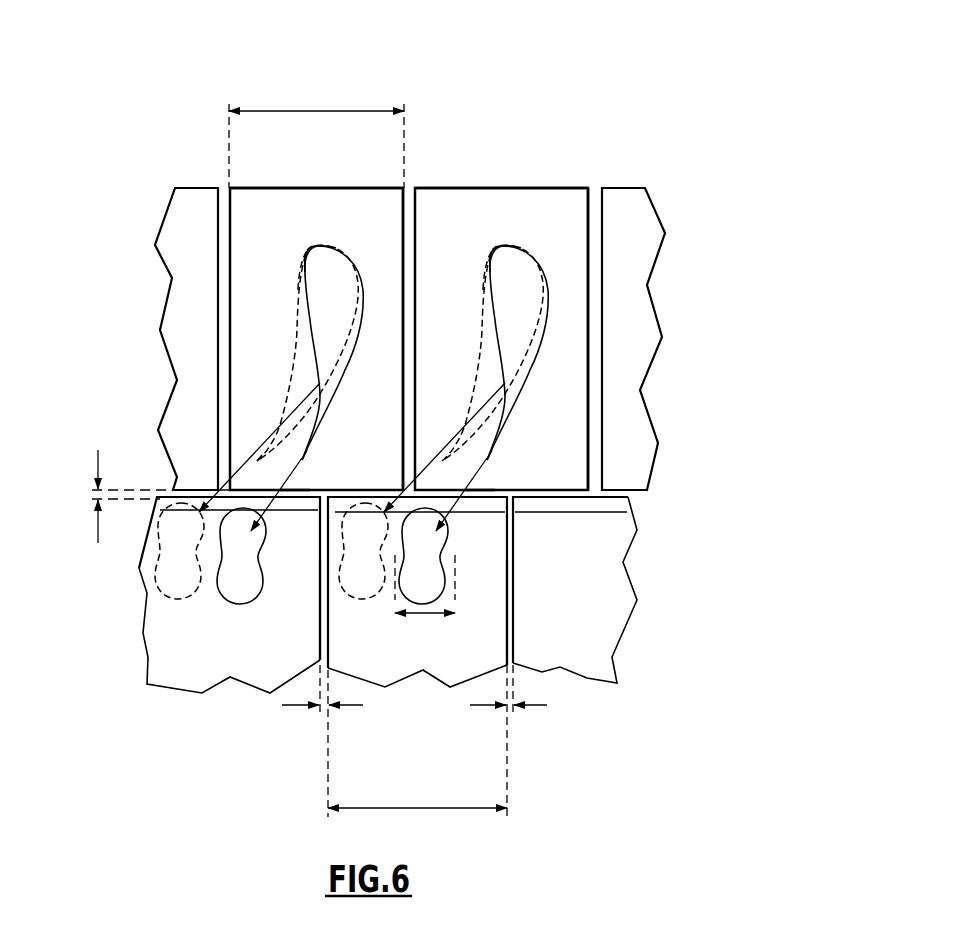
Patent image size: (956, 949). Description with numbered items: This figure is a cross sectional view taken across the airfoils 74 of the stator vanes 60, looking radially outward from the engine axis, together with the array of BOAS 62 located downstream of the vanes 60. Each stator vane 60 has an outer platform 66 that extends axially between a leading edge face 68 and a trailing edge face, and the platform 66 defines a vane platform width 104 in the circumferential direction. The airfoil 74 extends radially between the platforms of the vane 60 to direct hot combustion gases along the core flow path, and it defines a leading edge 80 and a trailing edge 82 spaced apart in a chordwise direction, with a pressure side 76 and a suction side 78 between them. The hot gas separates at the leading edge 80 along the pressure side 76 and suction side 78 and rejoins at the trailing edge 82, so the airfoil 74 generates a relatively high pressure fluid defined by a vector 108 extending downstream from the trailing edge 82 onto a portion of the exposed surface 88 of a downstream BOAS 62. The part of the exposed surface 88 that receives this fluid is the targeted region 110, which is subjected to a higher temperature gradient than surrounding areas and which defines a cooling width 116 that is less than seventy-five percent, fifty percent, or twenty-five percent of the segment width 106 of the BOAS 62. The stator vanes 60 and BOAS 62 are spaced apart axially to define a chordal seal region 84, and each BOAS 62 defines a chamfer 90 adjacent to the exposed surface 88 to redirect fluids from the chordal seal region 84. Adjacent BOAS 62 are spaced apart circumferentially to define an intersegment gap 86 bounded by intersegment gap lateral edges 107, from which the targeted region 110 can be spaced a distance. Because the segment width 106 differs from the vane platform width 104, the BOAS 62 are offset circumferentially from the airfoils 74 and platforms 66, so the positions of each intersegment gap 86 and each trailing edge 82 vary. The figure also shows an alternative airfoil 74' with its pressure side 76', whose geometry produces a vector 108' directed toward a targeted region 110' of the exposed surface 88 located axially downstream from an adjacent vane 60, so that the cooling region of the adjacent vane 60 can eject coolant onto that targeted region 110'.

The stator vane 60 is at (377, 187).
The BOAS 62 is at (144, 659).
The outer platform 66 is at (383, 244).
The leading edge face 68 is at (285, 188).
The airfoil 74 is at (369, 243).
The airfoil 74' is at (334, 277).
The pressure side 76 is at (441, 353).
The suction side (alternate position) 76' is at (390, 353).
The suction side 78 is at (312, 340).
The leading edge 80 is at (325, 247).
The trailing edge 82 is at (302, 460).
The chordal seal region 84 is at (98, 530).
The intersegment gap 86 is at (293, 705).
The exposed surface 88 is at (238, 654).
The chamfer 90 is at (620, 505).
The vane platform width 104 is at (305, 111).
The segment width 106 is at (420, 808).
The intersegment gap lateral edges 107 is at (320, 648).
The vector 108 is at (372, 441).
The vector 108' is at (177, 435).
The targeted region 110 is at (352, 548).
The targeted region 110' is at (291, 506).
The cooling width 116 is at (435, 614).